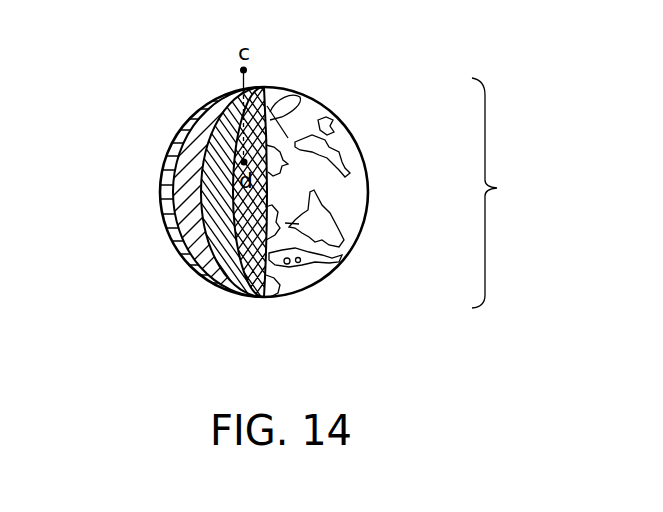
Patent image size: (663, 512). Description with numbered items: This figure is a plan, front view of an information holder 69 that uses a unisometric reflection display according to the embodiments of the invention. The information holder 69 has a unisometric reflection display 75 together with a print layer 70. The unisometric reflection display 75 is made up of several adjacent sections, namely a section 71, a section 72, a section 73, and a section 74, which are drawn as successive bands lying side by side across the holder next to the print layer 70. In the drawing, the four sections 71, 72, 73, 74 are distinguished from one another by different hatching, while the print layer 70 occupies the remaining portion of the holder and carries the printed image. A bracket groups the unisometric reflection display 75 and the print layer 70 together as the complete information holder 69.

The information holder 69 is at (500, 193).
The print layer 70 is at (390, 144).
The section 71 is at (268, 278).
The section 72 is at (236, 288).
The section 73 is at (198, 242).
The section 74 is at (172, 234).
The unisometric reflection display 75 is at (140, 161).